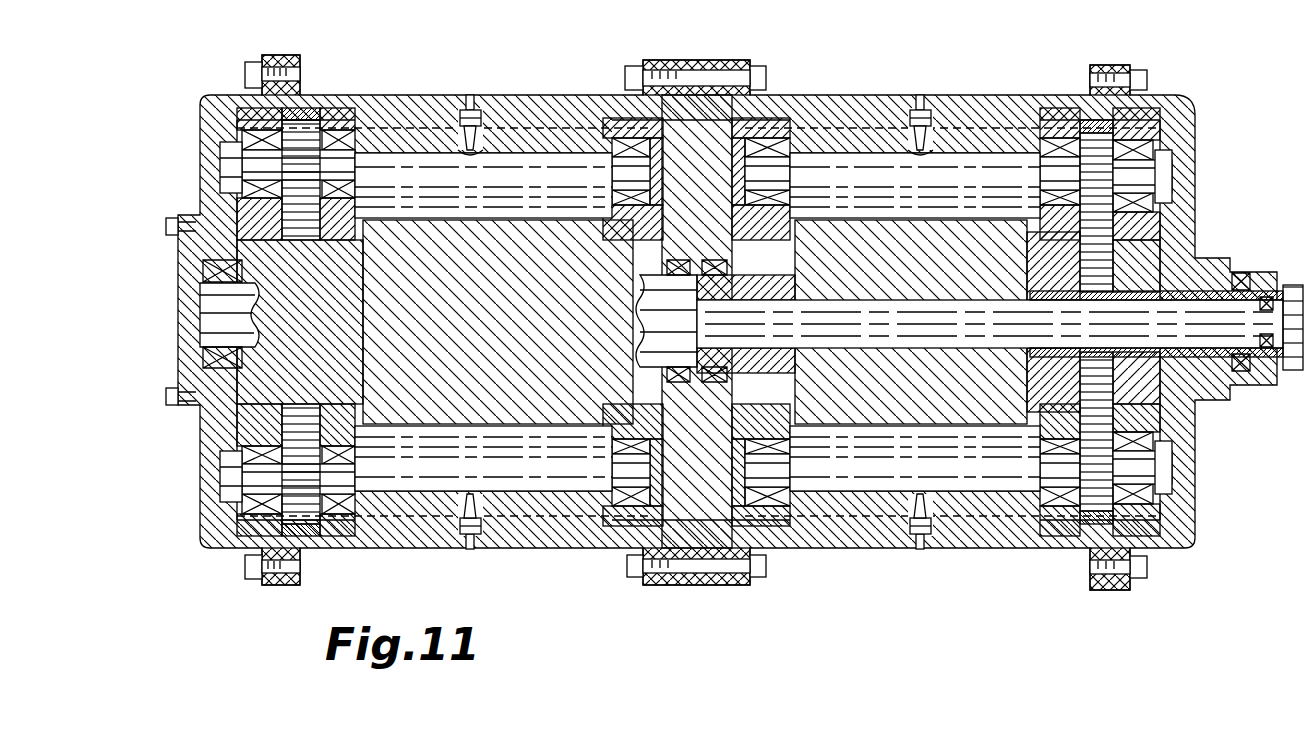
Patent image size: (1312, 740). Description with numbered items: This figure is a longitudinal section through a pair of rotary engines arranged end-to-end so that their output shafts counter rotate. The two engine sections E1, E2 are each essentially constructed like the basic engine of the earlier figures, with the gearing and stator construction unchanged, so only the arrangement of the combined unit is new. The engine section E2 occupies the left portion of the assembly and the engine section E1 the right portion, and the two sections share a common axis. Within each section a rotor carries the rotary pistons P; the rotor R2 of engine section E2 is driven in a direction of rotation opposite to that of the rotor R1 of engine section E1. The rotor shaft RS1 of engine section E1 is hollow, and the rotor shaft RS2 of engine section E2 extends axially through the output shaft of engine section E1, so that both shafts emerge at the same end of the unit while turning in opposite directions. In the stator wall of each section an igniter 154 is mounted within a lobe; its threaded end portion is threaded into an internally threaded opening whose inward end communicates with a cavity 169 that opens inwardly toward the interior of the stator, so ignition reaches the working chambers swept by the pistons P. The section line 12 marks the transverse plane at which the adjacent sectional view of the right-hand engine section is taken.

The engine section E2 is at (401, 96).
The engine section E1 is at (1006, 99).
The igniter 154 is at (450, 150).
The cavity 169 is at (480, 150).
The pistons P is at (538, 175).
The rotor R1 is at (977, 410).
The rotor R2 is at (418, 400).
The rotor shaft RS1 is at (1207, 300).
The rotor shaft RS2 is at (1217, 342).
The section line 12- 12 is at (898, 20).